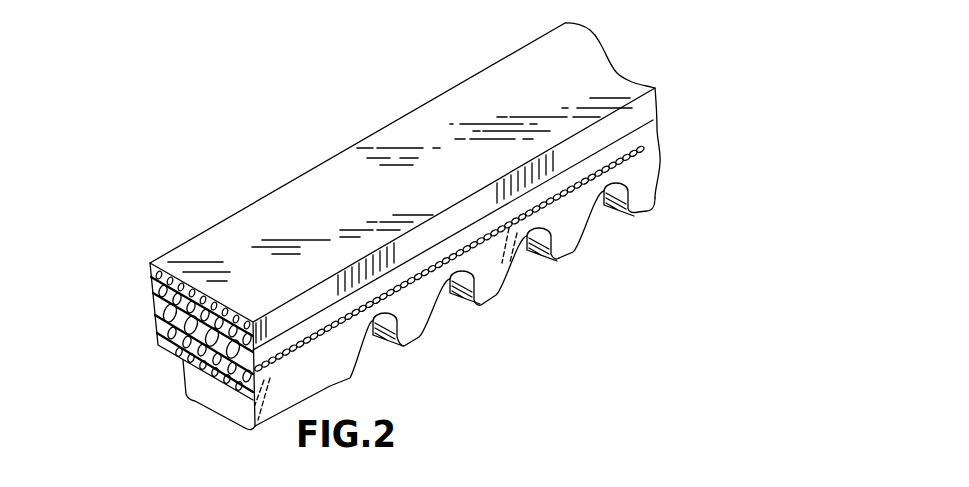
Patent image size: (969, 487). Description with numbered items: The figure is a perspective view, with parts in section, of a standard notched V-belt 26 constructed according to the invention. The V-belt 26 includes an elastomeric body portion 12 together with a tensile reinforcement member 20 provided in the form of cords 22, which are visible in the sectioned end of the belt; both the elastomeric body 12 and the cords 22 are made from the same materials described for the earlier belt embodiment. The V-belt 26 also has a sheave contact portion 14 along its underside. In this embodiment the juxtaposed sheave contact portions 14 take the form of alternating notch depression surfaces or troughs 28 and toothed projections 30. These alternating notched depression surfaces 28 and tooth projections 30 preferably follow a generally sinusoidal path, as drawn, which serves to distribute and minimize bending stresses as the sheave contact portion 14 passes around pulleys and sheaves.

The elastomeric body portion 12 is at (401, 178).
The sheave contact portion 14 is at (406, 339).
The tensile reinforcement member 20 is at (140, 296).
The cords 22 is at (170, 342).
The V-belt 26 is at (266, 170).
The notch depression surfaces 28 is at (533, 240).
The toothed projections 30 is at (570, 230).